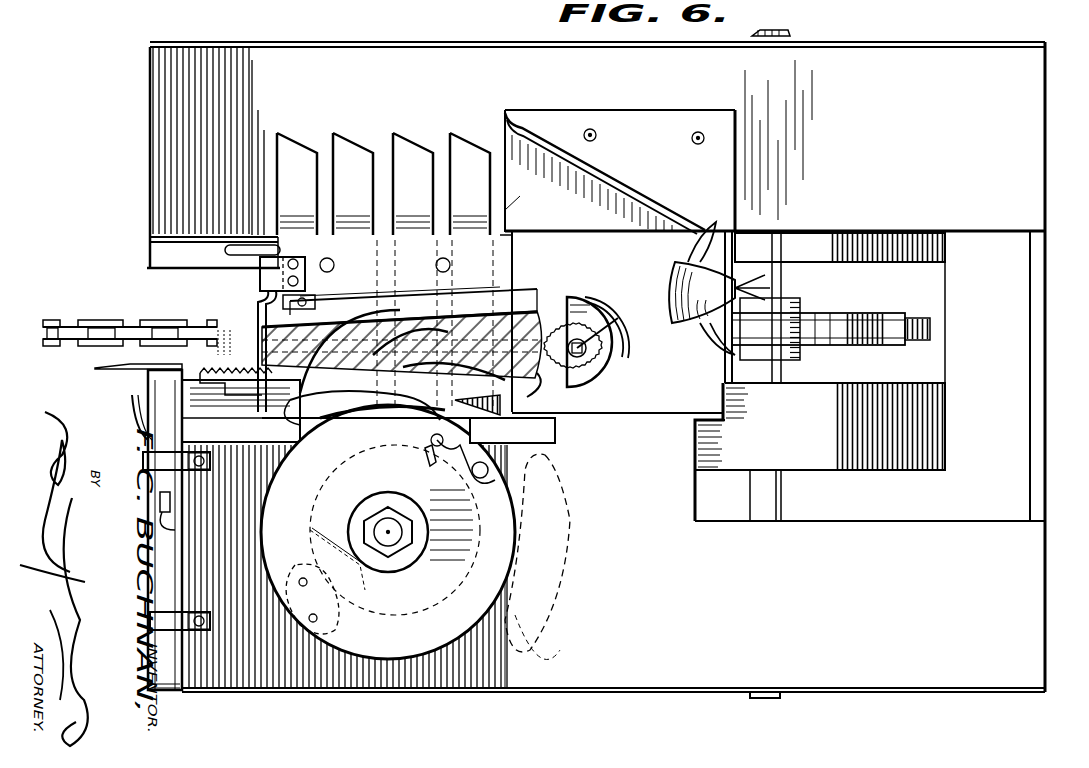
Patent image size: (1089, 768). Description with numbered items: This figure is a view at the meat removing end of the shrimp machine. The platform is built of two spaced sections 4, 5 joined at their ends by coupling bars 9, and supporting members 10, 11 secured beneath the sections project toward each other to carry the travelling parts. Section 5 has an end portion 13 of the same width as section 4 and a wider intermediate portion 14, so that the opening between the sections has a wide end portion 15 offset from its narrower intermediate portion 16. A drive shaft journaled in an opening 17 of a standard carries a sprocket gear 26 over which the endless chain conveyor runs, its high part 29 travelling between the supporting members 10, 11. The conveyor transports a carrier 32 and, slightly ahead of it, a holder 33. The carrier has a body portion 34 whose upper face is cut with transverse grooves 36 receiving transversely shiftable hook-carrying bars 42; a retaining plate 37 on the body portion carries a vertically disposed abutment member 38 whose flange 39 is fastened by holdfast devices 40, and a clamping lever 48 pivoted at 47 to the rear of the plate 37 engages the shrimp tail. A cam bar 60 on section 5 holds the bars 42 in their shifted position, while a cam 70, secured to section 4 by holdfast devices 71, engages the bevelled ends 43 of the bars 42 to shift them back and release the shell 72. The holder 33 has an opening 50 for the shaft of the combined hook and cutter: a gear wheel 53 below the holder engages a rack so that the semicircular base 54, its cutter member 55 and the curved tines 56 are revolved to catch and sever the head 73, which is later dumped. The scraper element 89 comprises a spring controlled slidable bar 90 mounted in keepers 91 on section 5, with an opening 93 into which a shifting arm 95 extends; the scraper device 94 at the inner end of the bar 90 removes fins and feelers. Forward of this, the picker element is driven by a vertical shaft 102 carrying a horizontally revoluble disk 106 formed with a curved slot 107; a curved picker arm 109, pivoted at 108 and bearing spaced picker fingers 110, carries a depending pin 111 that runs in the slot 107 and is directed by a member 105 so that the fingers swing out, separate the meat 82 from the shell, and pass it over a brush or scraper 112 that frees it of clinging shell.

The platform section 4 is at (1037, 150).
The platform section 5 is at (870, 558).
The coupling bars 9 is at (1033, 262).
The supporting member 10 is at (945, 248).
The supporting member 11 is at (945, 420).
The end portion 13 is at (790, 36).
The intermediate portion 14 is at (698, 500).
The end portion of opening 15 is at (982, 351).
The intermediate portion of opening 16 is at (205, 272).
The opening 17 is at (765, 700).
The sprocket gear 26 is at (905, 310).
The high part of conveyor 29 is at (90, 346).
The carrier 32 is at (515, 196).
The holder 33 is at (550, 232).
The body portion 34 is at (498, 232).
The transverse grooves 36 is at (258, 430).
The retaining plate 37 is at (318, 145).
The abutment member 38 is at (470, 288).
The flange 39 is at (345, 298).
The holdfast devices 40 is at (335, 248).
The hook-carrying bars 42 is at (292, 162).
The bevelled end 43 is at (480, 155).
The pivot connection 47 is at (260, 278).
The clamping lever 48 is at (256, 318).
The opening 50 is at (218, 368).
The gear wheel 53 is at (603, 352).
The revoluble base 54 is at (606, 320).
The cutter member 55 is at (575, 320).
The tines 56 is at (605, 302).
The cam bar 60 is at (138, 402).
The cam 70 is at (735, 180).
The holdfast devices 71 is at (596, 133).
The shell 72 is at (568, 300).
The severed head 73 is at (690, 326).
The meat 82 is at (545, 378).
The scraper element 89 is at (178, 484).
The slidable bar 90 is at (172, 603).
The keepers 91 is at (185, 633).
The opening 93 is at (170, 502).
The scraper device 94 is at (140, 372).
The shifting arm 95 is at (175, 530).
The shaft 102 is at (355, 535).
The directing member 105 is at (322, 559).
The disk 106 is at (388, 532).
The curved slot 107 is at (425, 458).
The pivot 108 is at (472, 474).
The picker arm 109 is at (480, 435).
The picker fingers 110 is at (435, 325).
The pin 111 is at (431, 440).
The brush or scraper 112 is at (495, 650).